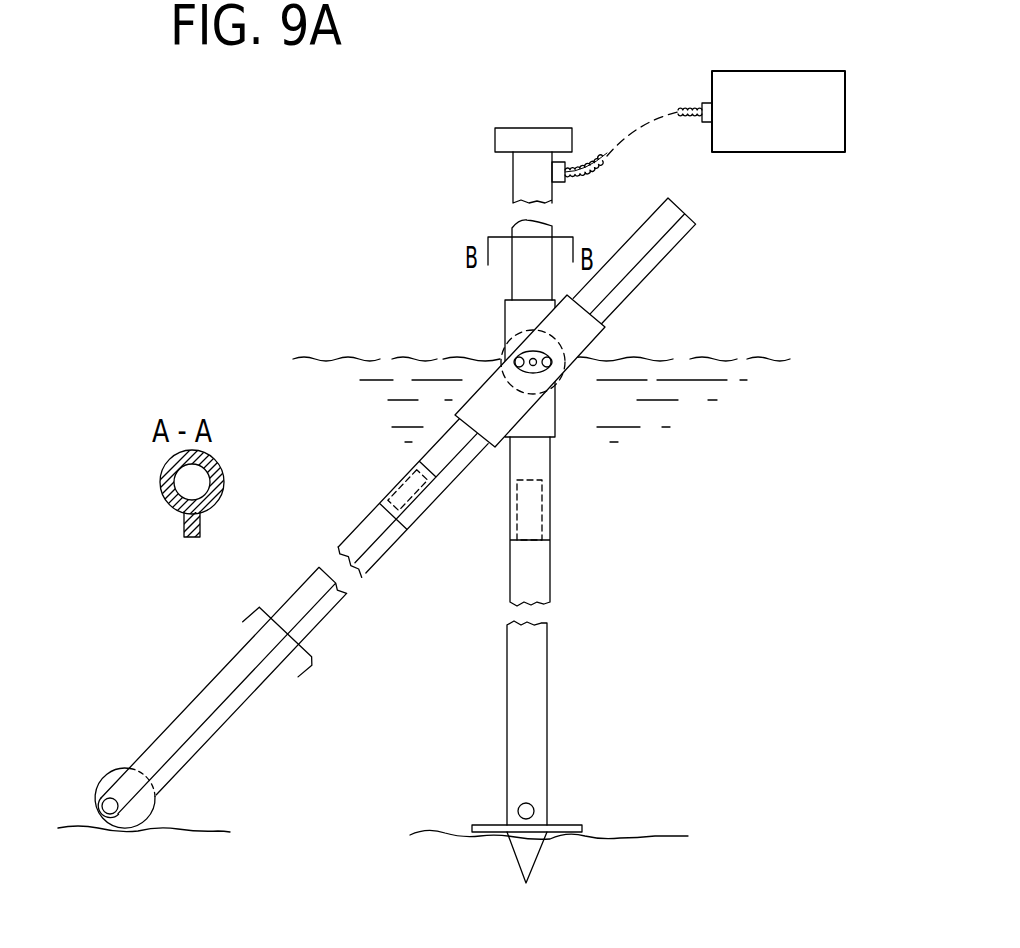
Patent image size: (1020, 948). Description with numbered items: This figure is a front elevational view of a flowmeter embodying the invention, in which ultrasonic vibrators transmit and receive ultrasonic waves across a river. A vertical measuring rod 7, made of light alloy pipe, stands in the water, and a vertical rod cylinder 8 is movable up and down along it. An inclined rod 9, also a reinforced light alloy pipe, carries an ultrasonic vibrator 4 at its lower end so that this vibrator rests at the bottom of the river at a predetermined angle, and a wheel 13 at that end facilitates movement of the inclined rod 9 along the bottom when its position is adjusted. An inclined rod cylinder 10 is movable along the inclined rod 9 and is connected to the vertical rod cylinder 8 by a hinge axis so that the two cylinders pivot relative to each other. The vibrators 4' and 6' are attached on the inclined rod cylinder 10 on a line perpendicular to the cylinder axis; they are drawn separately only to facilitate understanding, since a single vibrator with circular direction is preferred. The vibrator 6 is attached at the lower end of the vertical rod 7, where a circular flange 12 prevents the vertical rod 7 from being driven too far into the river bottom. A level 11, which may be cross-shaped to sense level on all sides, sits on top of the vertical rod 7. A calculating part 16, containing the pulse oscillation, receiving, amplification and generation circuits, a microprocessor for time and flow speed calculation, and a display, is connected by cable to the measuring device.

The ultrasonic vibrator 4 is at (80, 808).
The ultrasonic vibrator 4' is at (503, 350).
The ultrasonic vibrator 6 is at (553, 806).
The ultrasonic vibrator 6' is at (583, 362).
The vertical measuring rod 7 is at (538, 572).
The vertical rod cylinder 8 is at (515, 315).
The inclined rod 9 is at (304, 594).
The inclined rod cylinder 10 is at (598, 330).
The level 11 is at (530, 136).
The circular flange 12 is at (481, 824).
The wheel 13 is at (121, 768).
The calculating part 16 is at (778, 153).